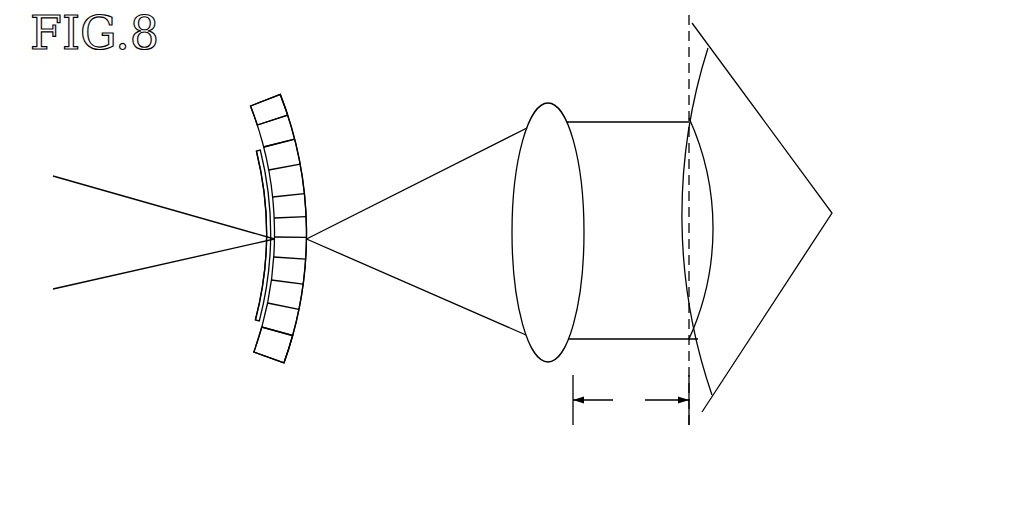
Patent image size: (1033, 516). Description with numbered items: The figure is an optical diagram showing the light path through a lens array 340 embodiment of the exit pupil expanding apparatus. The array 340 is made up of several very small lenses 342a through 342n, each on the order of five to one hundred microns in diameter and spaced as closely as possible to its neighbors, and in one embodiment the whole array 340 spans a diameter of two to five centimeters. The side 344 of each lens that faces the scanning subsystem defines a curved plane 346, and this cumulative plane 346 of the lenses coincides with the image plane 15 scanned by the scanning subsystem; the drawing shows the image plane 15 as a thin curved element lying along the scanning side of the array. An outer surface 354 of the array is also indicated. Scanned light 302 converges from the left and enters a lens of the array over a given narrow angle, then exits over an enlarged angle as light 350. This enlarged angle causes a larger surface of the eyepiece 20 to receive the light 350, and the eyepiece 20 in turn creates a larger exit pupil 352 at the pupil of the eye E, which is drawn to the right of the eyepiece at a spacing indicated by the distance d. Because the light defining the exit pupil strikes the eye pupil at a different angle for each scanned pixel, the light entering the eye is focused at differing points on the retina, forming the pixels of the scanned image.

The lens array 340 is at (278, 70).
The lens 342a is at (279, 110).
The lens 342n is at (286, 345).
The side of lens 344 is at (281, 158).
The outer surface of mirror assembly 354 is at (315, 210).
The image plane 15 is at (261, 153).
The curved plane 346 is at (257, 276).
The light 302 is at (130, 242).
The light 350 is at (462, 245).
The eyepiece 20 is at (557, 106).
The eye E is at (747, 97).
The exit pupil 352 is at (689, 200).
The distance between lens and eye d is at (631, 400).